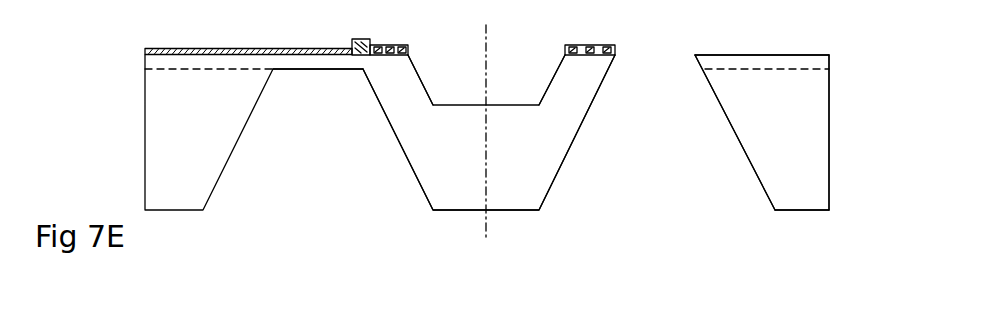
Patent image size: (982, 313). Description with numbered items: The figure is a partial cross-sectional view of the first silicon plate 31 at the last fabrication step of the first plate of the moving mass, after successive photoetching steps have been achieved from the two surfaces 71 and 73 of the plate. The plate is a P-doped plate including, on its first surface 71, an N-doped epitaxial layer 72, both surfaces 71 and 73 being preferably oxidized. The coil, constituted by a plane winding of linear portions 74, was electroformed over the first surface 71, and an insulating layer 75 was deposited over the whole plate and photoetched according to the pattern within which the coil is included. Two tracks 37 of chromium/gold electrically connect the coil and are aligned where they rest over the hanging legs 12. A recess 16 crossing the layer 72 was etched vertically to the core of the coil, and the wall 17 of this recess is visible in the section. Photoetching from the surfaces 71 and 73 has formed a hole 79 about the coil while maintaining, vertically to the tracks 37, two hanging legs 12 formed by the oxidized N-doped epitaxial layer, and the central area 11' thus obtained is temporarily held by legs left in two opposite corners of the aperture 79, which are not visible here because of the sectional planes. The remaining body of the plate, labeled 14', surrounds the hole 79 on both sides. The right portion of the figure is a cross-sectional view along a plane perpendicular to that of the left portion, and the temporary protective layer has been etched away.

The tracks 37 is at (218, 49).
The N-doped epitaxial layer 72 is at (145, 69).
The silicon body 14' is at (502, 132).
The hanging legs 12 is at (313, 68).
The insulating layer 75 is at (408, 46).
The linear portions 74 is at (365, 57).
The trench side wall 17 is at (418, 82).
The recess 16 is at (500, 105).
The central area 11' is at (489, 160).
The first surface 71 is at (789, 41).
The first silicon plate 31 is at (838, 133).
The second surface 73 is at (797, 217).
The hole 79 is at (652, 174).